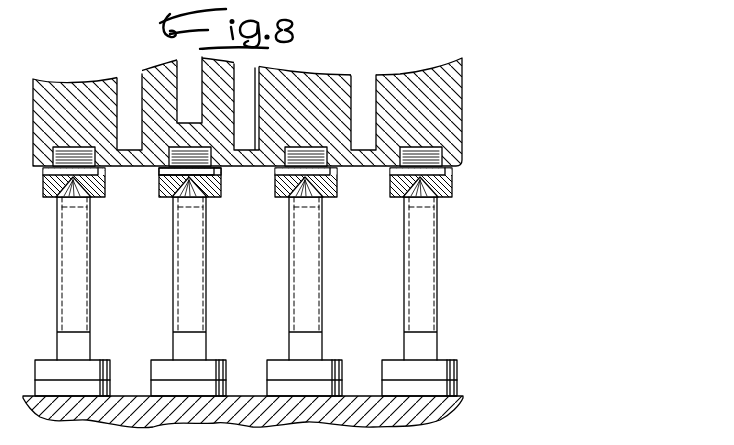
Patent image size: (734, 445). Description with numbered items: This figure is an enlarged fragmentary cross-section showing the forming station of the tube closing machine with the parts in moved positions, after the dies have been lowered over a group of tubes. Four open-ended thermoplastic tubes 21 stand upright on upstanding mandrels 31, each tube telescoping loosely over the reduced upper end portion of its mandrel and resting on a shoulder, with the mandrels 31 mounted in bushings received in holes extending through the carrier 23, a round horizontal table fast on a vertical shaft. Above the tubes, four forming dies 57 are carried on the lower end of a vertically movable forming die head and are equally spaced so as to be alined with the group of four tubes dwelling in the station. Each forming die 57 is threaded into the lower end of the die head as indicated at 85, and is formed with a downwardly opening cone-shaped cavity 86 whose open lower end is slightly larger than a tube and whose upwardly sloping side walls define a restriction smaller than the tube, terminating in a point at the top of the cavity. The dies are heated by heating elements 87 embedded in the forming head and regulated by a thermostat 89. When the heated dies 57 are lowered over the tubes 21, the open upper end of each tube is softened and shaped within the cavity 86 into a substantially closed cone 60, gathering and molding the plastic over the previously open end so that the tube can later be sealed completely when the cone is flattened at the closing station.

The heating elements 87 is at (122, 89).
The thermostat 89 is at (180, 73).
The threaded connection 85 is at (80, 147).
The forming die 57 is at (45, 198).
The cone-shaped cavity 86 is at (220, 188).
The cone 60 is at (100, 185).
The tube 21 is at (87, 250).
The mandrel 31 is at (85, 347).
The carrier 23 is at (242, 403).